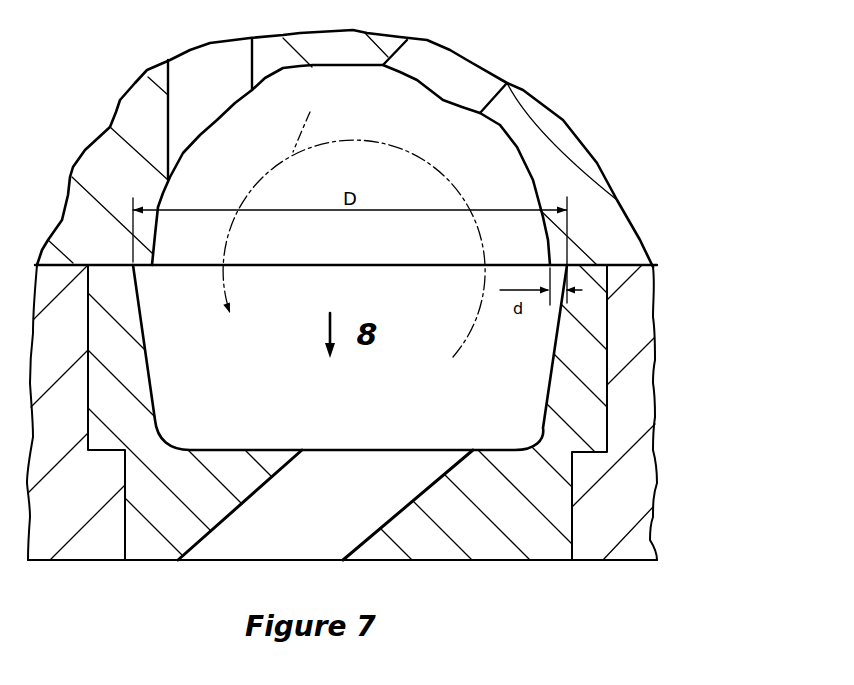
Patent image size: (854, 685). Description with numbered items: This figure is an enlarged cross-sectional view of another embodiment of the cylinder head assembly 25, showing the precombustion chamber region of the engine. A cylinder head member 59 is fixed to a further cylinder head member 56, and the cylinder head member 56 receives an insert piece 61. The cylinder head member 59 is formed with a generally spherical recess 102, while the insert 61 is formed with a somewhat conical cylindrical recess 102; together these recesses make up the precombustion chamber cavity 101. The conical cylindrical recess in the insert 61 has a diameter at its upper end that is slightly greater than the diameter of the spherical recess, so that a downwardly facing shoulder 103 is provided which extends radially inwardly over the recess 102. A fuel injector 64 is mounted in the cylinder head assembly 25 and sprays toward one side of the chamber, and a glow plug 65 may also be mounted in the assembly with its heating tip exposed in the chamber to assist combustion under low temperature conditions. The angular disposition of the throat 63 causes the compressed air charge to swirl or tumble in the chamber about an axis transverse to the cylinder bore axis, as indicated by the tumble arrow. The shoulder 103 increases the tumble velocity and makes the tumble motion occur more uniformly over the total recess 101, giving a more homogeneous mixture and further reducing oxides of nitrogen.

The cylinder head assembly 25 is at (664, 359).
The cylinder head member 56 is at (640, 477).
The cylinder head member 59 is at (605, 220).
The insert piece 61 is at (593, 417).
The throat 63 is at (427, 490).
The fuel injector 64 is at (457, 70).
The glow plug 65 is at (190, 70).
The precombustion chamber cavity 101 is at (378, 253).
The recess 102 is at (515, 155).
The shoulder 103 is at (133, 268).